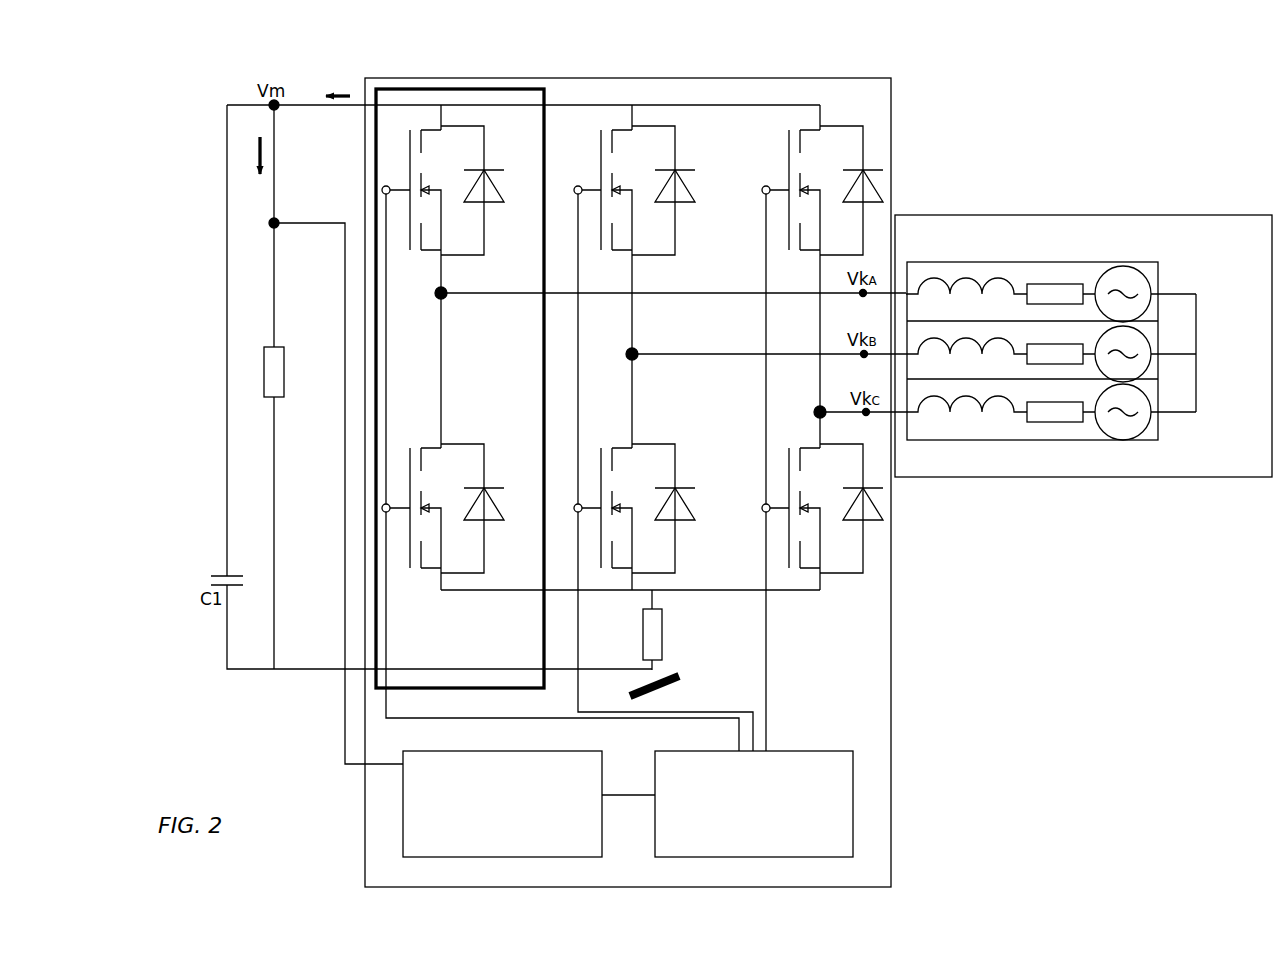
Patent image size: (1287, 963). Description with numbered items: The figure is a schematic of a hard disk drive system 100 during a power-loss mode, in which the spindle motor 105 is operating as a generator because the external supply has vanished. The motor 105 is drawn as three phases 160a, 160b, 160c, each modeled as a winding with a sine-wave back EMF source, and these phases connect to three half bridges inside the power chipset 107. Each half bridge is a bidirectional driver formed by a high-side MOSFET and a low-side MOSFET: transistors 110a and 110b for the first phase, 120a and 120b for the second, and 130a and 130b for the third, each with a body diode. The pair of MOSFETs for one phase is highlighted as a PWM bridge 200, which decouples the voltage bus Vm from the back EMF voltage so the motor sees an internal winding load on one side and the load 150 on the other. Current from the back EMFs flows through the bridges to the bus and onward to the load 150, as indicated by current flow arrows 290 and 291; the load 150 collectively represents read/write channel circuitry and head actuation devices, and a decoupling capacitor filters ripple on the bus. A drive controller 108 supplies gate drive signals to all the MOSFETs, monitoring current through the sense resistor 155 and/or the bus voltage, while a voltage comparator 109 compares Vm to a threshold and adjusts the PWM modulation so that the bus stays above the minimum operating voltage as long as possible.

The hard disk drive (HDD) system 100 is at (1029, 582).
The spindle motor 105 is at (1083, 332).
The power chipset 107 is at (895, 754).
The drive controller 108 is at (754, 804).
The voltage comparator 109 is at (502, 804).
The high-side MOSFET transistor 110a is at (468, 113).
The low-side MOSFET transistor 110b is at (463, 426).
The high-side MOSFET transistor 120a is at (654, 114).
The low-side MOSFET transistor 120b is at (693, 451).
The high-side MOSFET transistor 130a is at (869, 112).
The low-side MOSFET transistor 130b is at (847, 587).
The load 150 is at (296, 380).
The sense resistor 155 is at (670, 630).
The motor phase 160a is at (1162, 305).
The motor phase 160b is at (1162, 372).
The motor phase 160c is at (1161, 435).
The PWM bridge 200 is at (549, 86).
The current flow arrow 290 is at (335, 86).
The current flow arrow 291 is at (251, 162).